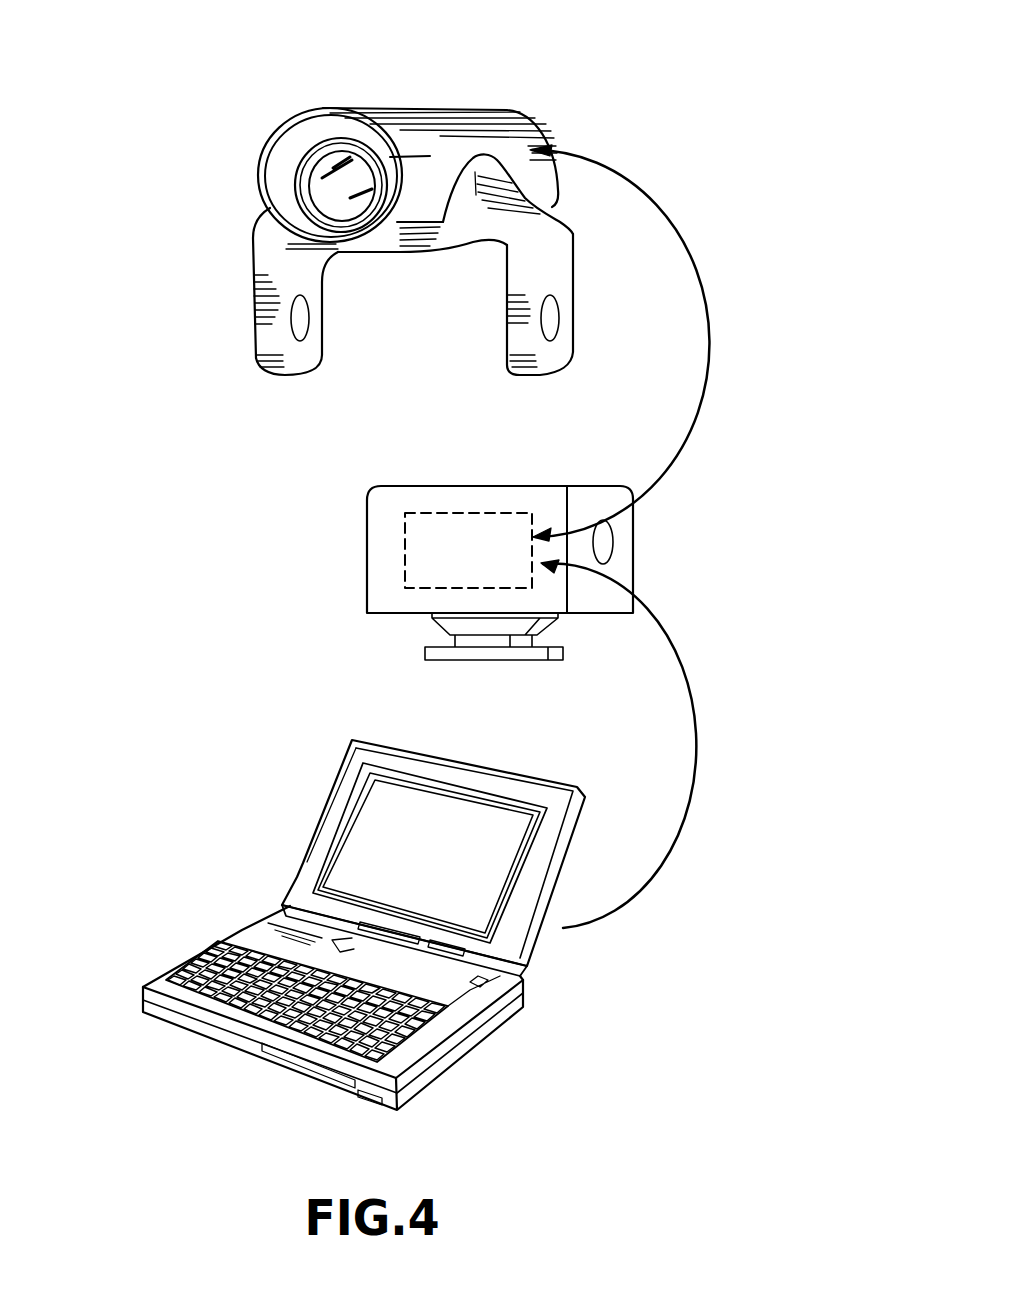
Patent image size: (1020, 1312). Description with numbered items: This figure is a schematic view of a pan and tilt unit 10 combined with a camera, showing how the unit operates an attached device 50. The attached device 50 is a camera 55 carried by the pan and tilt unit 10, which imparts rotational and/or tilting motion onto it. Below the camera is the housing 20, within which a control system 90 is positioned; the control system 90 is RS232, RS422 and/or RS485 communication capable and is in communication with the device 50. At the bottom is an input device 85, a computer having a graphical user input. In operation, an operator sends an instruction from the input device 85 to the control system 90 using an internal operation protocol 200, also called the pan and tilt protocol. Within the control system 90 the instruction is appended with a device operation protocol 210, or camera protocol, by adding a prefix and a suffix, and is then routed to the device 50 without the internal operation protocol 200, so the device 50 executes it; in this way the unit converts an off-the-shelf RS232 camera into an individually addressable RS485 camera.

The pan and tilt unit 10 is at (142, 35).
The housing 20 is at (367, 537).
The device 50 is at (577, 103).
The camera 55 is at (330, 192).
The input device 85 is at (217, 947).
The control system 90 is at (437, 577).
The internal operation protocol 200 is at (683, 700).
The device operation protocol 210 is at (708, 349).